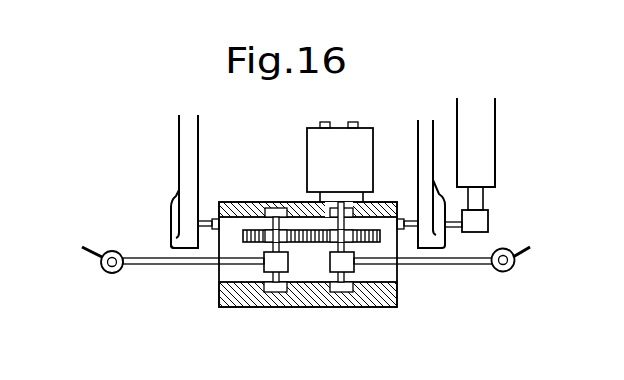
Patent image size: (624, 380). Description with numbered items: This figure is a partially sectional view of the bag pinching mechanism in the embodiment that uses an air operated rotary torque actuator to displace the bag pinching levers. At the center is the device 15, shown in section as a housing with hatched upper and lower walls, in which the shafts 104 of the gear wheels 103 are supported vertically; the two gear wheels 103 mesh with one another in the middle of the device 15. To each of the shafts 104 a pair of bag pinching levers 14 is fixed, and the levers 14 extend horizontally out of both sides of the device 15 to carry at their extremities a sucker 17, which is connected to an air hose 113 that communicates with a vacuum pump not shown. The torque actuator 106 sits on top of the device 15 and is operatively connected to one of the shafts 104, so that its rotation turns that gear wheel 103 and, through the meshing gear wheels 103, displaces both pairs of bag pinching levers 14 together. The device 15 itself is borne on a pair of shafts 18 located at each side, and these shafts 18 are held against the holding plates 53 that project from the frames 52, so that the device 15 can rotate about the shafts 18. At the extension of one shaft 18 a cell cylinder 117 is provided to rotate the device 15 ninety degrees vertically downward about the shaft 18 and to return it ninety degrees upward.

The bag pinching lever 14 is at (167, 266).
The device 15 is at (253, 205).
The sucker 17 is at (105, 270).
The shaft 18 is at (203, 213).
The frame 52 is at (190, 194).
The holding plate 53 is at (177, 222).
The gear wheel 103 is at (250, 243).
The shaft 104 is at (298, 203).
The torque actuator 106 is at (373, 172).
The air hose 113 is at (303, 245).
The cell cylinder 117 is at (496, 143).